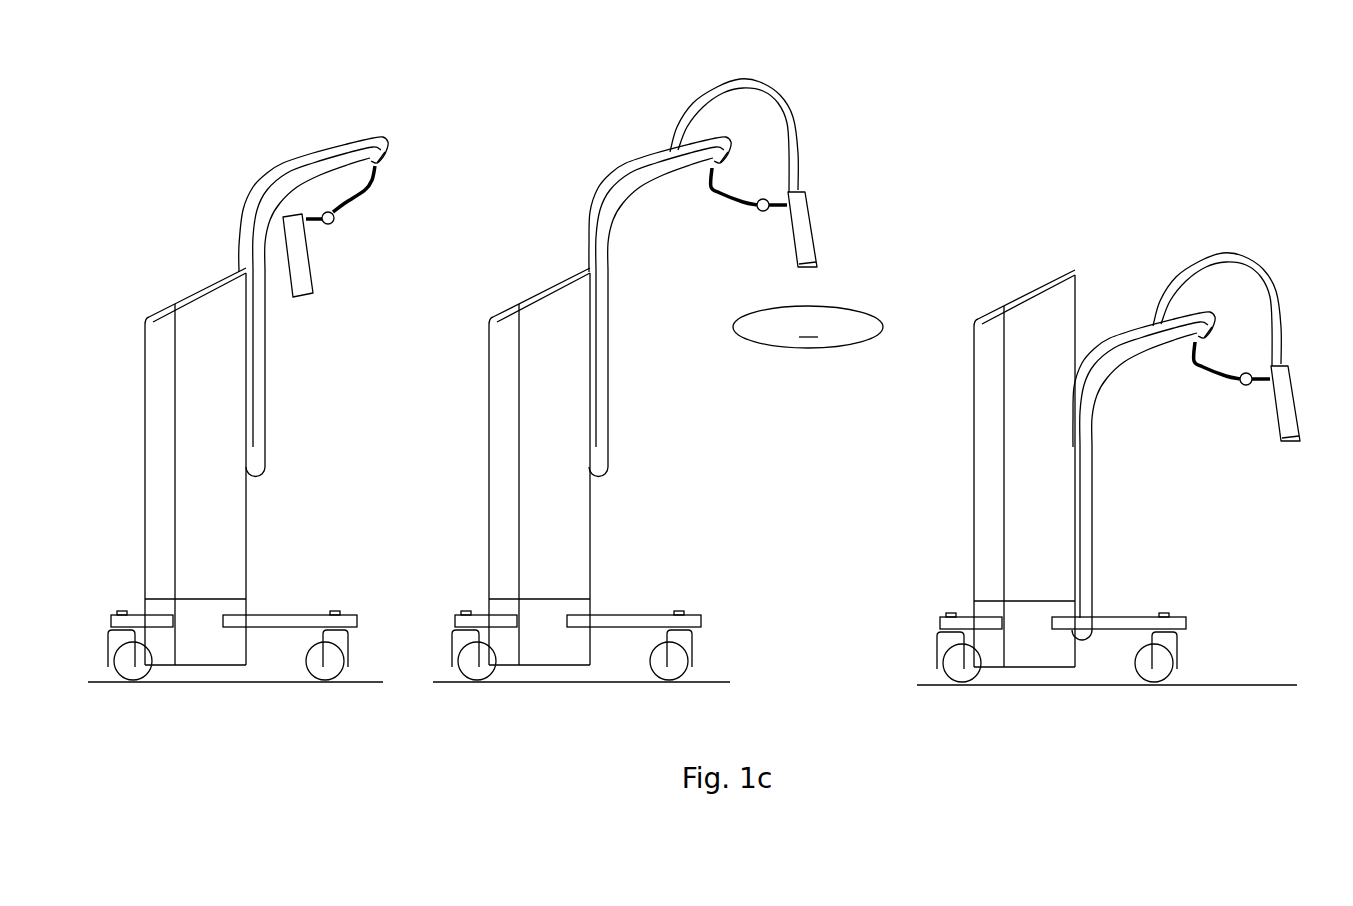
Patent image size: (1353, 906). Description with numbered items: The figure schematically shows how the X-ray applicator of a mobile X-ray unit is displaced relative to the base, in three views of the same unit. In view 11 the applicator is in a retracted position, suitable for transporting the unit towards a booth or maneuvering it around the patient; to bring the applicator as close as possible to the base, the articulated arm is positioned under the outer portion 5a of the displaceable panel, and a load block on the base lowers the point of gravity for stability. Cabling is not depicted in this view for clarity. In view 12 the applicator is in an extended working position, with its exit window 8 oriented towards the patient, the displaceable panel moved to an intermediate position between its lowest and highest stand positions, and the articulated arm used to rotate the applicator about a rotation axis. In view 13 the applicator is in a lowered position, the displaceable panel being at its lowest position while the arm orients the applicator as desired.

The view 11 is at (197, 198).
The view 12 is at (540, 202).
The view 13 is at (1023, 203).
The outer portion 5a is at (373, 134).
The exit window 8 is at (808, 270).